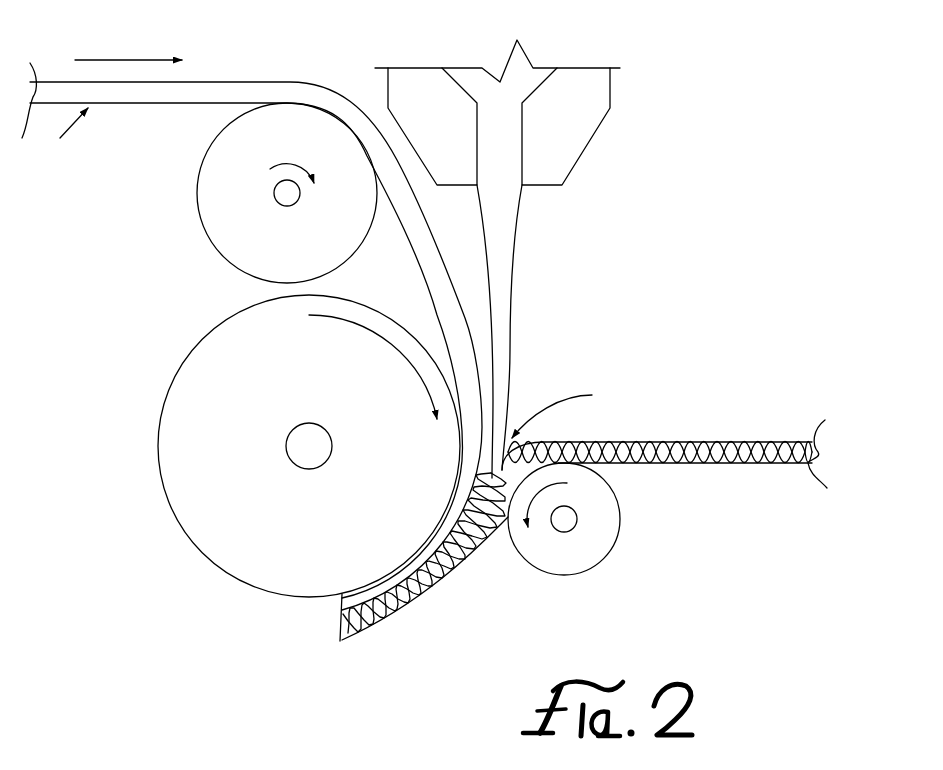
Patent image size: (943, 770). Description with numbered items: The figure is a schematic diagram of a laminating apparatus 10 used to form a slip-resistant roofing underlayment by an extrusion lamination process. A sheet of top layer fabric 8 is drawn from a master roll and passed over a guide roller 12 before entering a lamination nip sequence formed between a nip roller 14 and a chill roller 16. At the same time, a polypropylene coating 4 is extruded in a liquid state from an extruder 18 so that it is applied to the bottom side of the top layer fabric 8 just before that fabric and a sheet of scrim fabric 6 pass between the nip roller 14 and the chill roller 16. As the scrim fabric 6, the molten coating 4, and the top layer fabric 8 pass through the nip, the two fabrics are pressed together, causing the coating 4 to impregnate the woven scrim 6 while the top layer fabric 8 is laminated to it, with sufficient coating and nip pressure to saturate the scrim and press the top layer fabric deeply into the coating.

The coating 4 is at (498, 273).
The scrim fabric 6 is at (717, 448).
The top layer fabric 8 is at (75, 88).
The laminating apparatus 10 is at (117, 425).
The guide roller 12 is at (213, 202).
The nip roller 14 is at (605, 503).
The chill roller 16 is at (220, 515).
The extruder 18 is at (567, 138).